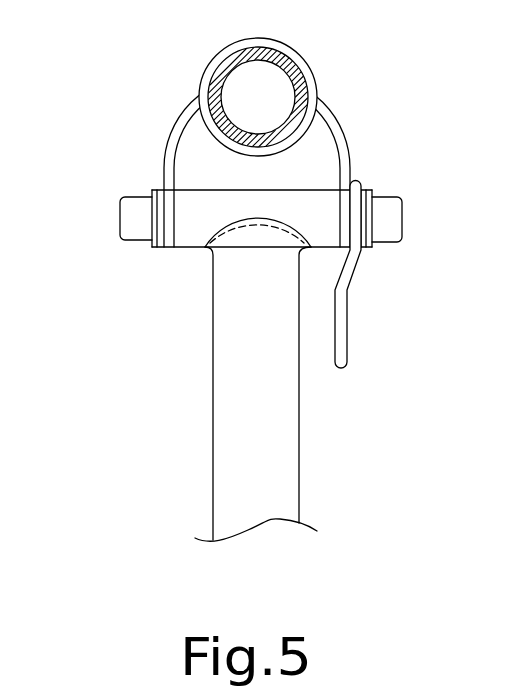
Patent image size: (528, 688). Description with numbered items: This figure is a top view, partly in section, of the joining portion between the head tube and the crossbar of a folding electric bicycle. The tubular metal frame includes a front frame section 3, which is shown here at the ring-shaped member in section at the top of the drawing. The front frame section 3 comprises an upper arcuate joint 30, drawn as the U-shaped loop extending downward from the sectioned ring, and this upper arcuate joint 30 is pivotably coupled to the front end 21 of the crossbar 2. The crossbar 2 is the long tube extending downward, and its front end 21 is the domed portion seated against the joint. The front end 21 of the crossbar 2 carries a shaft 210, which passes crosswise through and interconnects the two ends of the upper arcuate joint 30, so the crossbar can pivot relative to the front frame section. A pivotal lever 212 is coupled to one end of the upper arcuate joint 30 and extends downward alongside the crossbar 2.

The crossbar 2 is at (253, 390).
The front end of the crossbar 21 is at (250, 248).
The shaft 210 is at (133, 220).
The pivotal lever 212 is at (338, 355).
The front frame section 3 is at (268, 42).
The upper arcuate joint 30 is at (183, 120).